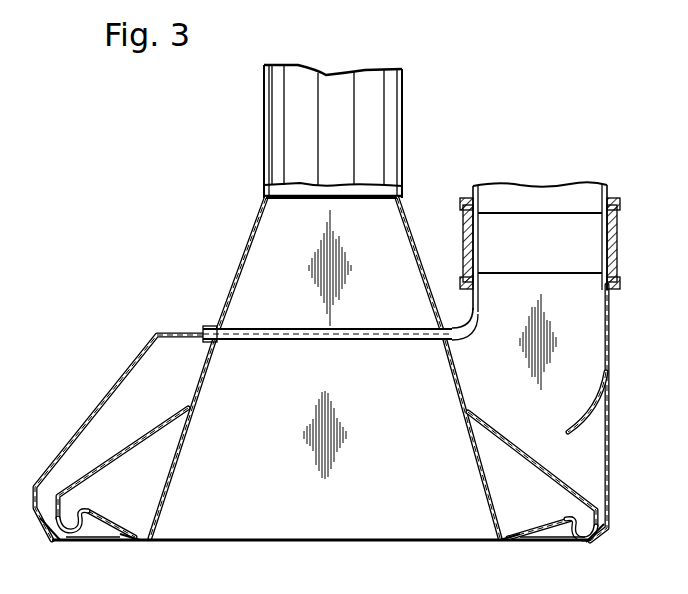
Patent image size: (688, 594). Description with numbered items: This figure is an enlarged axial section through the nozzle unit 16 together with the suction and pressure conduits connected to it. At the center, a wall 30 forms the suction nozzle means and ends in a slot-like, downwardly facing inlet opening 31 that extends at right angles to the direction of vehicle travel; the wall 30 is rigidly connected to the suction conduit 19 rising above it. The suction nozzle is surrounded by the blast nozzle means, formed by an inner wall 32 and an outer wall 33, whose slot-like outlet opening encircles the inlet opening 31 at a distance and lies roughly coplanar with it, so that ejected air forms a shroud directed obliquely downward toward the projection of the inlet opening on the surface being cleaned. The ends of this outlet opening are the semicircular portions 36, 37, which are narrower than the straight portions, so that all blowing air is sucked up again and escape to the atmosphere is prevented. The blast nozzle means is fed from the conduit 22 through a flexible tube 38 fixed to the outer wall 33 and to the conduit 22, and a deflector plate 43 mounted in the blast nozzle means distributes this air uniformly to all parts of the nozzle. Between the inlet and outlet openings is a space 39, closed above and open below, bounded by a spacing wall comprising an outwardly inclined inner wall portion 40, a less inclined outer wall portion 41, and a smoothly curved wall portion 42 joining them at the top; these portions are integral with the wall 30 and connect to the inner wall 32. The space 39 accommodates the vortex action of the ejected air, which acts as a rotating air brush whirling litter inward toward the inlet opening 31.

The nozzle unit 16 is at (106, 390).
The suction conduit 19 is at (395, 125).
The conduit 22 is at (606, 192).
The wall 30 is at (214, 355).
The inlet opening 31 is at (404, 542).
The inner wall 32 is at (124, 454).
The outer wall 33 is at (75, 430).
The semicircular portion 36 is at (72, 540).
The semicircular portion 37 is at (588, 544).
The flexible tube 38 is at (618, 242).
The space 39 is at (118, 540).
The inner wall portion 40 is at (112, 530).
The outer wall portion 41 is at (86, 540).
The curved wall portion 42 is at (72, 516).
The deflector plate 43 is at (600, 414).